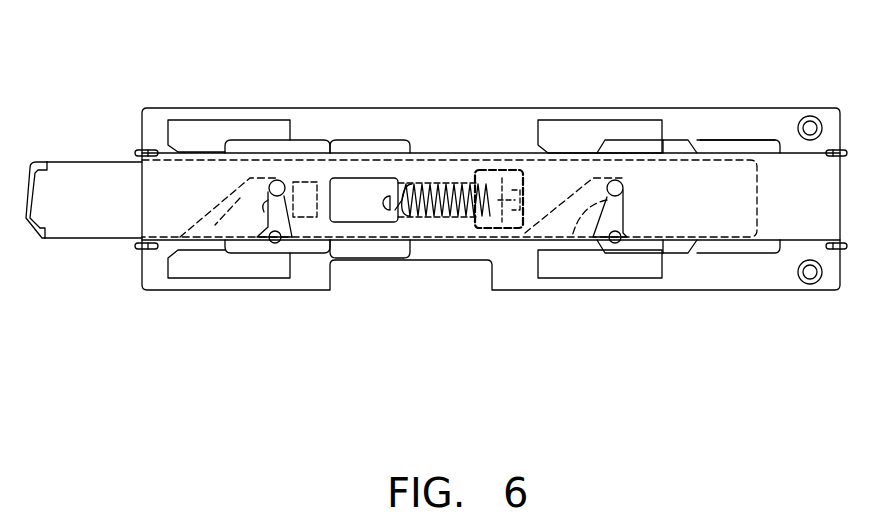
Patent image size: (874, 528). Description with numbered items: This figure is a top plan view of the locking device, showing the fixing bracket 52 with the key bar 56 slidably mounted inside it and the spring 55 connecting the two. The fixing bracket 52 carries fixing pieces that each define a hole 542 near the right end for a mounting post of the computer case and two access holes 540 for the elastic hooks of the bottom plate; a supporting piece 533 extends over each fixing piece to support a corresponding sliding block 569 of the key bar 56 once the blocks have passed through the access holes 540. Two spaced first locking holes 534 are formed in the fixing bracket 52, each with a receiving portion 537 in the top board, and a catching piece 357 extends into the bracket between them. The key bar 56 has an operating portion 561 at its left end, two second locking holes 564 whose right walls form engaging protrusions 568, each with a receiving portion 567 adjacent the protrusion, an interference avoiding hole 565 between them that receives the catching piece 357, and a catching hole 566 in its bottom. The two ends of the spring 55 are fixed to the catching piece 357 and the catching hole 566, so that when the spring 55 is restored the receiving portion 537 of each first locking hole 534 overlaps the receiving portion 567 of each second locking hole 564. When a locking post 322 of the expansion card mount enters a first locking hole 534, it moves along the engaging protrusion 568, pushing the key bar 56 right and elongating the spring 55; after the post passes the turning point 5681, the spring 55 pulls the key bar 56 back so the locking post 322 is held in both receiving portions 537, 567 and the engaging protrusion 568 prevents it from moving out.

The fixing bracket 52 is at (312, 120).
The spring 55 is at (466, 197).
The key bar 56 is at (87, 173).
The operating portion 561 is at (23, 217).
The second locking hole 564 is at (215, 225).
The interference avoiding hole 565 is at (466, 197).
The catching hole 566 is at (520, 236).
The receiving portion 567 is at (253, 175).
The engaging protrusion 568 is at (618, 205).
The turning point 5681 is at (572, 237).
The sliding block 569 is at (628, 140).
The supporting piece 533 is at (730, 145).
The first locking hole 534 is at (268, 243).
The receiving portion 537 is at (268, 180).
The access hole 540 is at (575, 128).
The hole 542 is at (810, 128).
The catching piece 357 is at (377, 205).
The locking post 322 is at (612, 243).